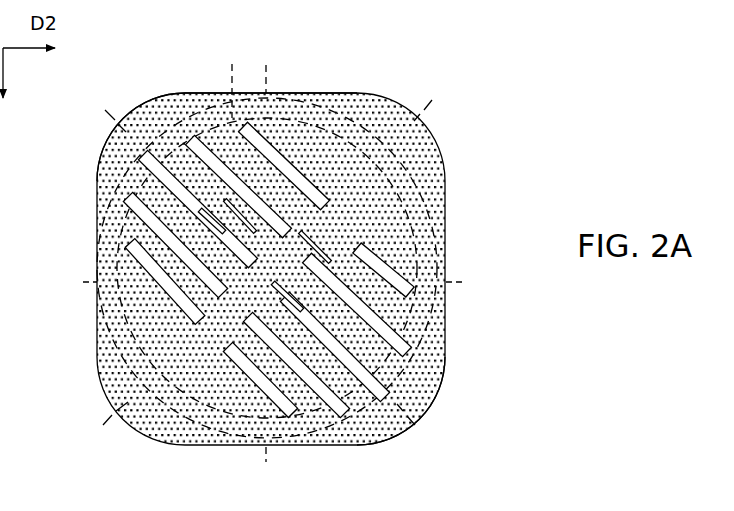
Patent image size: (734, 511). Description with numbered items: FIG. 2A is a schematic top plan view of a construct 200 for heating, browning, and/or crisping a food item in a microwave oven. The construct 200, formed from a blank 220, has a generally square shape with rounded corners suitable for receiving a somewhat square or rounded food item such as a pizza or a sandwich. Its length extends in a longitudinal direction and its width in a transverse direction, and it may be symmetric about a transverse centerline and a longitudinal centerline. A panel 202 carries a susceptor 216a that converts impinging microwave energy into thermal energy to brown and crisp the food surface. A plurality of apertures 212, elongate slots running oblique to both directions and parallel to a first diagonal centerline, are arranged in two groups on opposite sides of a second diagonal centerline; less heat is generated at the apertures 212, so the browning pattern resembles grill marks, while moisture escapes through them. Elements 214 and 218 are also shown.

The construct 200 is at (491, 118).
The panel 202 is at (359, 98).
The apertures 212 is at (373, 378).
The side edges 214 is at (97, 340).
The susceptor 216a is at (428, 175).
The inner region 218 is at (267, 268).
The blank 220 is at (172, 90).